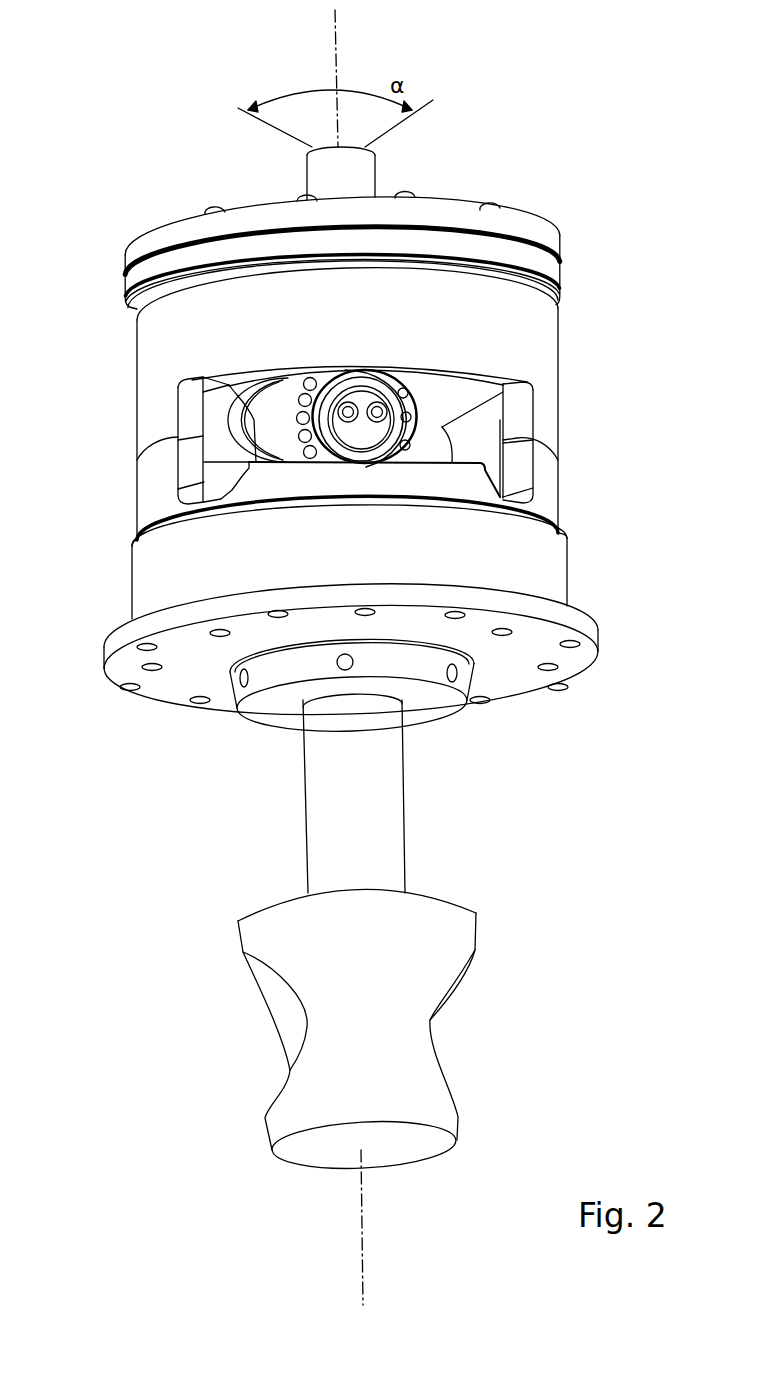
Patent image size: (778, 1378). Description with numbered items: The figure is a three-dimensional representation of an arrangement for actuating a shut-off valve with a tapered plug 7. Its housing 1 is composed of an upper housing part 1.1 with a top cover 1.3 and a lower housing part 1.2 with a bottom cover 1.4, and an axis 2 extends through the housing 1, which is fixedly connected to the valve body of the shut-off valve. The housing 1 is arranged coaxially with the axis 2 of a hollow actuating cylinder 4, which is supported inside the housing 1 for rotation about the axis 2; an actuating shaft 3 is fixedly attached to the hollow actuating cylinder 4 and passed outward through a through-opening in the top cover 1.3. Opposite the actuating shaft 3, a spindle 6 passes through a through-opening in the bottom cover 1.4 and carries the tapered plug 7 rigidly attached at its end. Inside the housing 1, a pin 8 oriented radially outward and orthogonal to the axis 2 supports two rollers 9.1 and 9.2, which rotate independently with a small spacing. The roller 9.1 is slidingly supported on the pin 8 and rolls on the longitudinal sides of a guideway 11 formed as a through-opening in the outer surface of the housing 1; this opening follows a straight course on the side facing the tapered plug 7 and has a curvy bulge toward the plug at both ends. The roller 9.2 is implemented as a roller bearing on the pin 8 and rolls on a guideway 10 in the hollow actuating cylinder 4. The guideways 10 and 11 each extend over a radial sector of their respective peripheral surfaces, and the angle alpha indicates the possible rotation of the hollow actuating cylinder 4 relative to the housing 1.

The housing 1 is at (595, 267).
The upper housing part 1.1 is at (524, 323).
The lower housing part 1.2 is at (537, 546).
The top cover 1.3 is at (489, 244).
The bottom cover 1.4 is at (517, 655).
The axis 2 is at (336, 55).
The actuating shaft 3 is at (350, 173).
The hollow actuating cylinder 4 is at (493, 397).
The spindle 6 is at (373, 797).
The tapered plug 7 is at (391, 1038).
The pin 8 is at (365, 423).
The roller 9.1 is at (400, 417).
The roller 9.2 is at (290, 423).
The guideway 10 is at (238, 405).
The guideway 11 is at (417, 373).